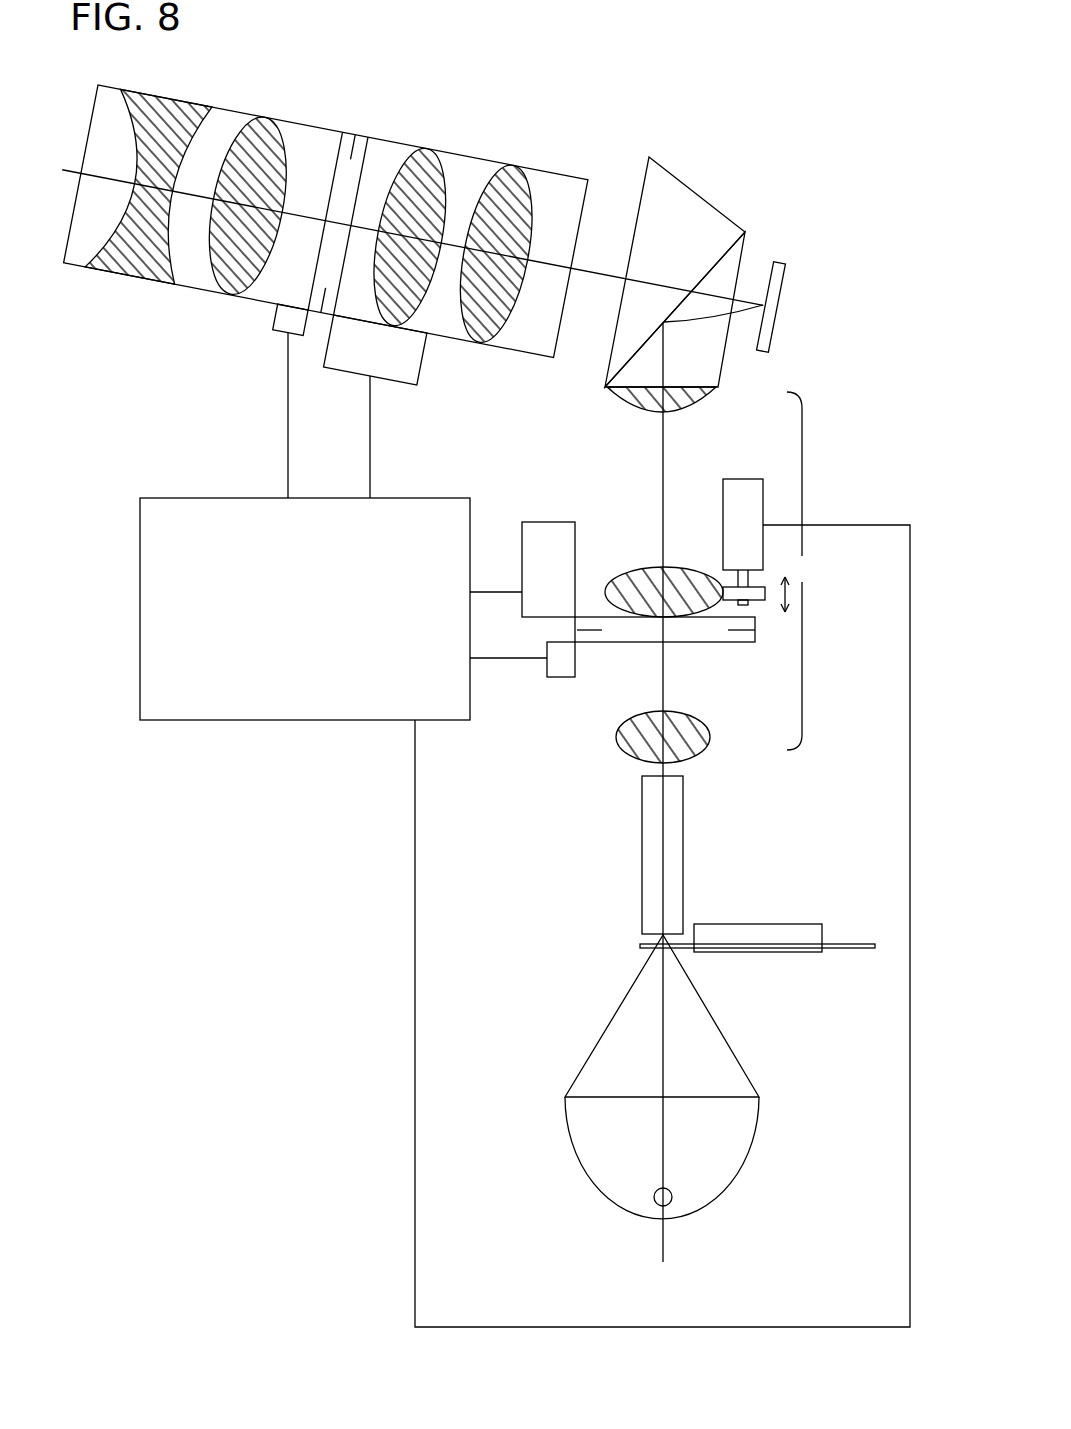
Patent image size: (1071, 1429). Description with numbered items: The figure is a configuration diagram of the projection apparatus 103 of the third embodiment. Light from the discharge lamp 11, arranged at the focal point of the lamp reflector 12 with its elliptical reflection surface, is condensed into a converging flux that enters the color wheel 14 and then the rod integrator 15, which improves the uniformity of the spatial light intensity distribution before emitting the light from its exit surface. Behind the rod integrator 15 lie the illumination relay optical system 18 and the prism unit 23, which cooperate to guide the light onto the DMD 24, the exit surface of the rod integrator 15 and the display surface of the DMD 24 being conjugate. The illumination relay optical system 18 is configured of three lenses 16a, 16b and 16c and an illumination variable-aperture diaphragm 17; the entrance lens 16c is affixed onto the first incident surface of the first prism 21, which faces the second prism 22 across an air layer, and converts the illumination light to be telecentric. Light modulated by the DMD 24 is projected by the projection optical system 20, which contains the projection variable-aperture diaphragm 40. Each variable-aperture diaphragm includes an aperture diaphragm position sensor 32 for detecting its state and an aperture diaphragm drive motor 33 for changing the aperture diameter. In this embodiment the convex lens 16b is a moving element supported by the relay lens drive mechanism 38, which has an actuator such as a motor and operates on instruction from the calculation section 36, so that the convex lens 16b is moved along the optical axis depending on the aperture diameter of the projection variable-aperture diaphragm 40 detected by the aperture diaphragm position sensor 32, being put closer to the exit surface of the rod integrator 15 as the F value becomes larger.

The projection apparatus 103 is at (693, 143).
The projection optical system 20 is at (232, 118).
The projection variable-aperture diaphragm 40 is at (358, 158).
The aperture diaphragm position sensor 32 is at (283, 322).
The aperture diaphragm drive motor 33 is at (412, 362).
The prism unit 23 is at (817, 193).
The second prism 22 is at (702, 212).
The first prism 21 is at (730, 263).
The DMD 24 is at (777, 290).
The illumination relay optical system 18 is at (802, 556).
The entrance lens 16c is at (700, 394).
The convex lens 16b is at (687, 578).
The lens 16a is at (698, 730).
The illumination variable-aperture diaphragm 17 is at (713, 642).
The relay lens drive mechanism 38 is at (743, 490).
The calculation section 36 is at (152, 609).
The rod integrator 15 is at (679, 844).
The color wheel 14 is at (760, 932).
The lamp reflector 12 is at (596, 1183).
The discharge lamp 11 is at (671, 1199).